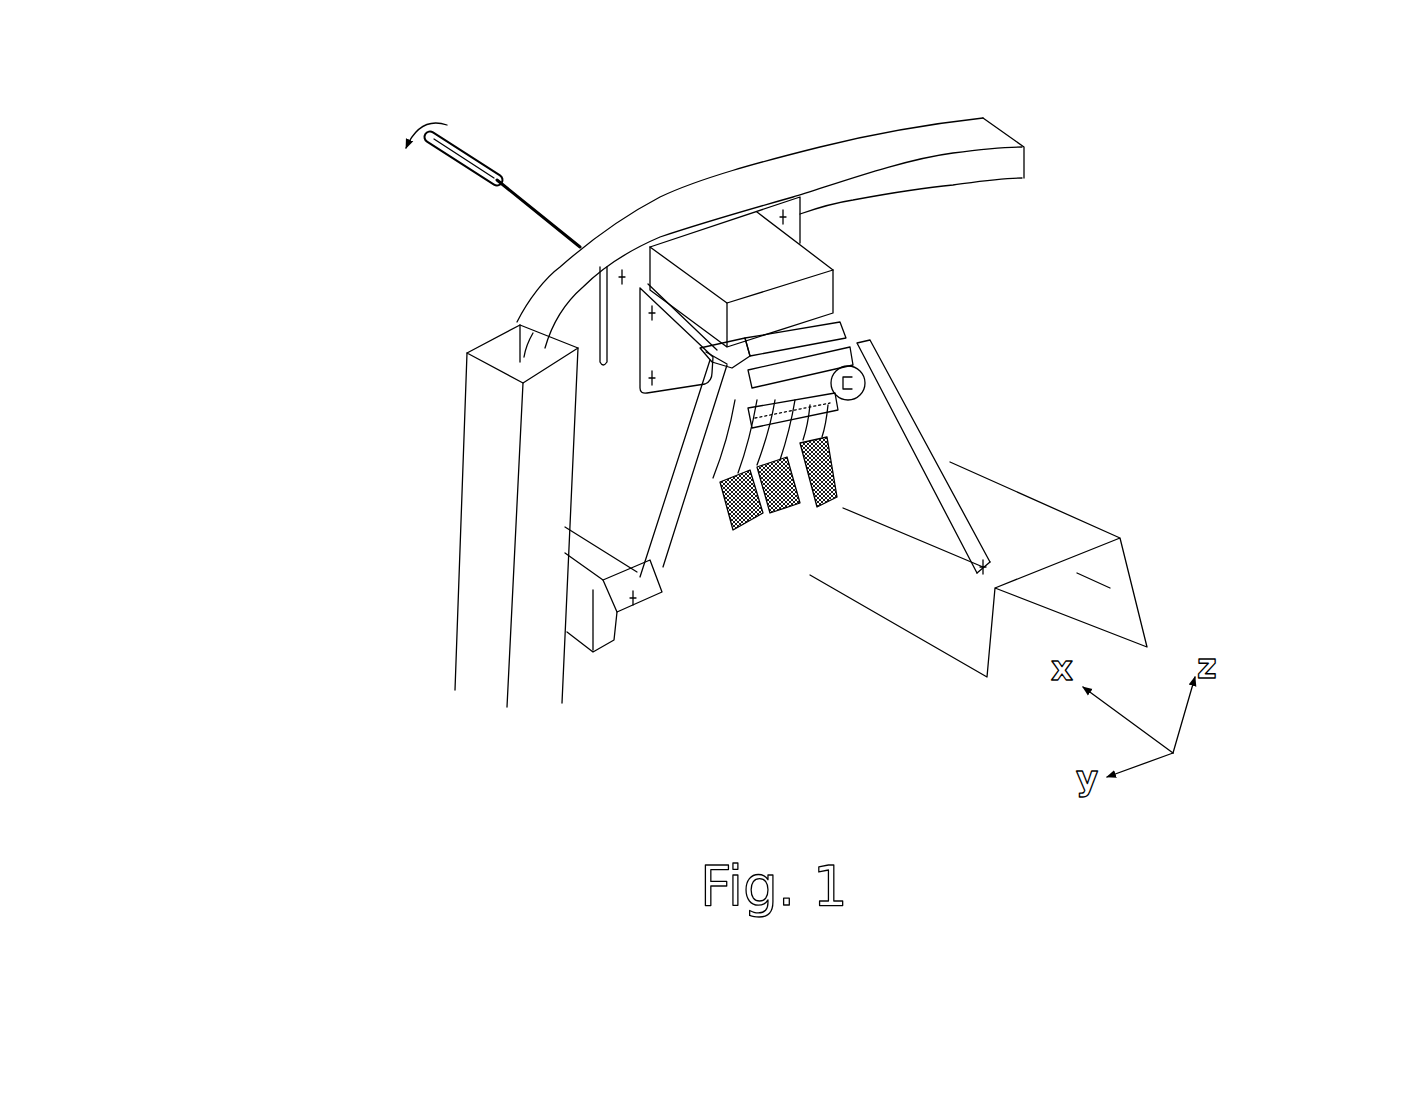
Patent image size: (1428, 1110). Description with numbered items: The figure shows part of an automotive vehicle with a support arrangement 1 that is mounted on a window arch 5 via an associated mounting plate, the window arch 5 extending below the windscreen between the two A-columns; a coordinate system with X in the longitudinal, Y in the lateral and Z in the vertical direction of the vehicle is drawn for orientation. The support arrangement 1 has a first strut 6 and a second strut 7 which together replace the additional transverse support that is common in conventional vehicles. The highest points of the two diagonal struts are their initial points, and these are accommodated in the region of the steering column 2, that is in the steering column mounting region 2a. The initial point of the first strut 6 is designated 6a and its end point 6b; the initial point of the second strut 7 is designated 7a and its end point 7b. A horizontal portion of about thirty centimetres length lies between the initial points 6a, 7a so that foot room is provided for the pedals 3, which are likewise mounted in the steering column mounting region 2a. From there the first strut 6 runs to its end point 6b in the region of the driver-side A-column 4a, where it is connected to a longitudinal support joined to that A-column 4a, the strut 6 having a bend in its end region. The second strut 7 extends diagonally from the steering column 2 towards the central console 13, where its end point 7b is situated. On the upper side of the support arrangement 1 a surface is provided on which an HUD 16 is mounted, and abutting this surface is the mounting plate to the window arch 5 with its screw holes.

The support arrangement 1 is at (955, 520).
The steering column 2 is at (856, 381).
The steering column mounting region 2a is at (763, 355).
The pedals 3 is at (780, 487).
The driver-side A-column 4a is at (490, 553).
The window arch 5 is at (835, 160).
The first strut 6 is at (668, 513).
The initial point of the first strut 6a is at (740, 366).
The end point of the first strut 6b is at (650, 575).
The second strut 7 is at (918, 455).
The initial point of the second strut 7a is at (847, 337).
The end point of the second strut 7b is at (987, 580).
The central console 13 is at (1110, 588).
The HUD 16 is at (733, 267).